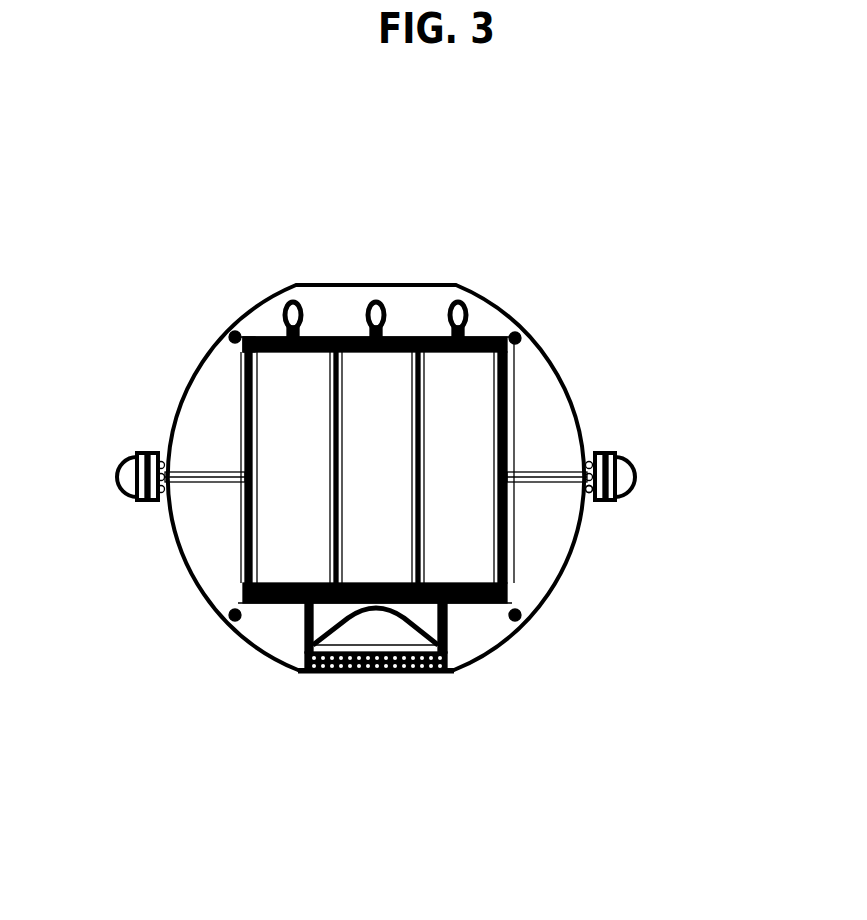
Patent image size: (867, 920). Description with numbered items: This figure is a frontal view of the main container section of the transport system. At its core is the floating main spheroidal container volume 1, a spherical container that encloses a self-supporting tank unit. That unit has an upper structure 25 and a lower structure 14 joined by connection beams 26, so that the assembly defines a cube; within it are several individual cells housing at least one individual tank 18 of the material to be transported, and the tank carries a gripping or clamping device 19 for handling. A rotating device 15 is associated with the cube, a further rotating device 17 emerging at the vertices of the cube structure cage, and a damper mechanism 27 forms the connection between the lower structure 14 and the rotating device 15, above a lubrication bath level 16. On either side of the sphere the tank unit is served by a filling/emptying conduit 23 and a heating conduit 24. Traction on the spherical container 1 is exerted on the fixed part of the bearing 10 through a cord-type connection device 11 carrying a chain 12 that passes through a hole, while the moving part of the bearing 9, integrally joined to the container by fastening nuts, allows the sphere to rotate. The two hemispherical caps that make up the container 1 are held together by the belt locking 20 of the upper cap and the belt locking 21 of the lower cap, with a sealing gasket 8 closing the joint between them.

The floating main spheroidal container volume 1 is at (373, 285).
The sealing gasket 8 is at (604, 502).
The moving part of the bearing 9 is at (598, 455).
The fixed part of the bearing 10 is at (615, 453).
The cord-type connection device 11 is at (633, 465).
The chain 12 is at (618, 498).
The lower structure of the self-supporting tank 14 is at (243, 593).
The rotating device 15 is at (426, 672).
The lubrication bath level 16 is at (458, 650).
The rotating device emerging and arranged in the vertices of a cube structure cage 17 is at (507, 335).
The individual tank of the material to be transported 18 is at (463, 433).
The gripping or clamping device 19 is at (470, 305).
The belt locking of the upper hemispherical cap 20 is at (589, 460).
The belt locking of the lower hemispherical cap 21 is at (590, 497).
The filling/emptying conduit of the tank unit 23 is at (195, 472).
The heating conduit of the tank unit 24 is at (217, 483).
The upper structure of the self-supporting unit tank 25 is at (250, 337).
The connection beams 26 is at (243, 543).
The damper mechanism 27 is at (448, 622).